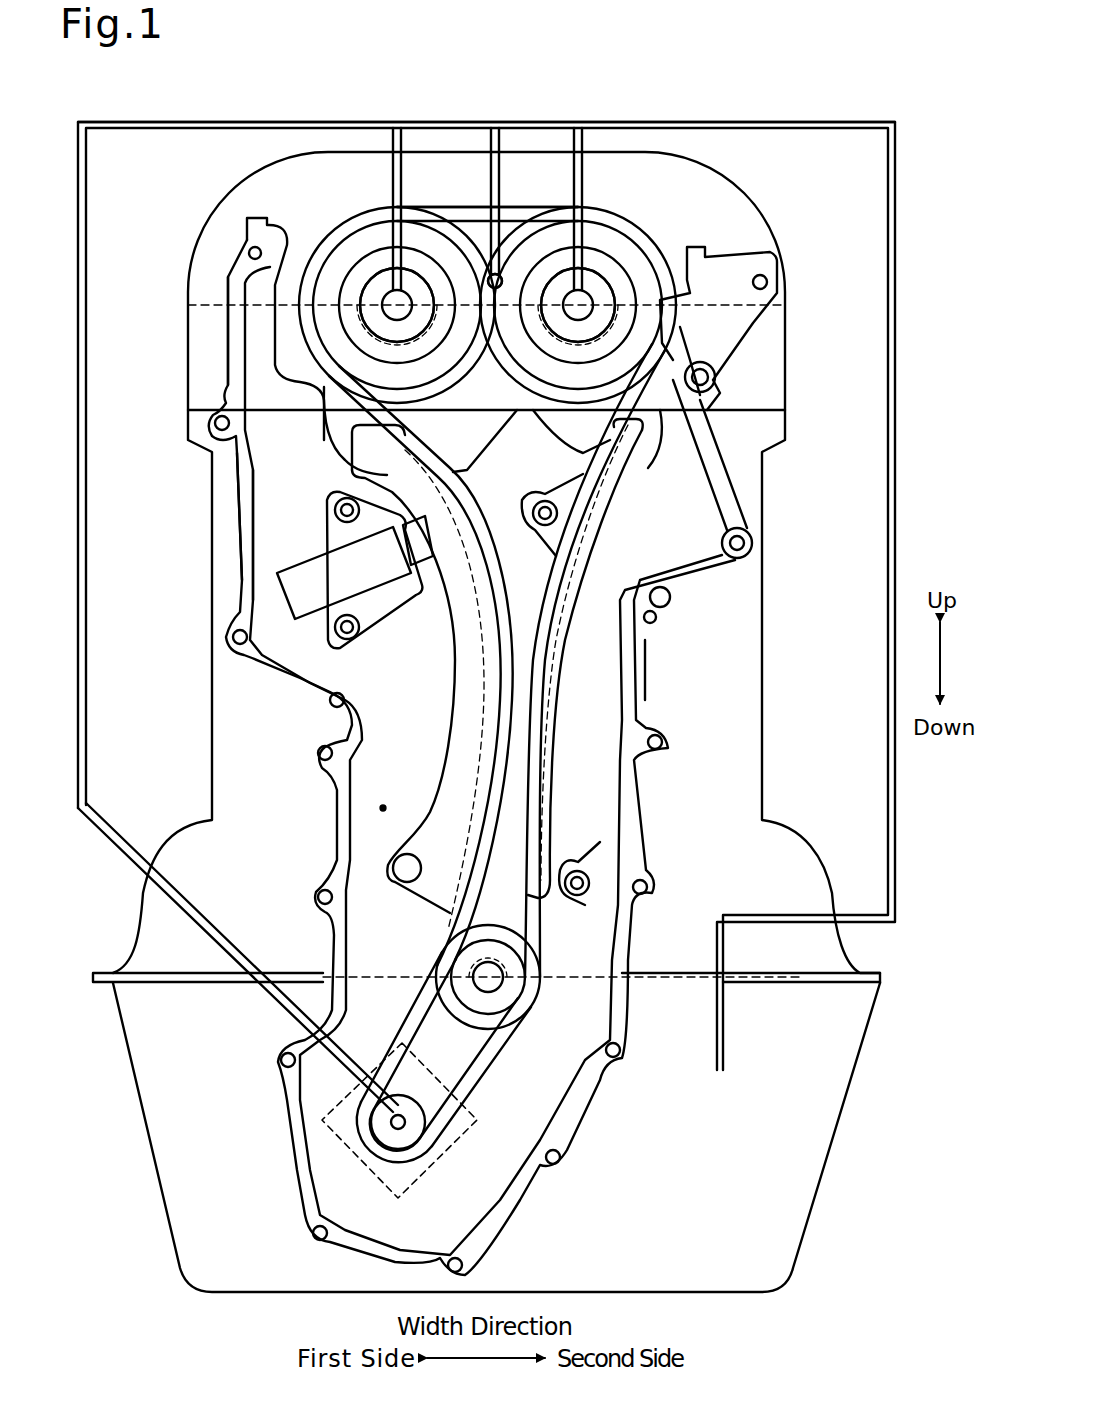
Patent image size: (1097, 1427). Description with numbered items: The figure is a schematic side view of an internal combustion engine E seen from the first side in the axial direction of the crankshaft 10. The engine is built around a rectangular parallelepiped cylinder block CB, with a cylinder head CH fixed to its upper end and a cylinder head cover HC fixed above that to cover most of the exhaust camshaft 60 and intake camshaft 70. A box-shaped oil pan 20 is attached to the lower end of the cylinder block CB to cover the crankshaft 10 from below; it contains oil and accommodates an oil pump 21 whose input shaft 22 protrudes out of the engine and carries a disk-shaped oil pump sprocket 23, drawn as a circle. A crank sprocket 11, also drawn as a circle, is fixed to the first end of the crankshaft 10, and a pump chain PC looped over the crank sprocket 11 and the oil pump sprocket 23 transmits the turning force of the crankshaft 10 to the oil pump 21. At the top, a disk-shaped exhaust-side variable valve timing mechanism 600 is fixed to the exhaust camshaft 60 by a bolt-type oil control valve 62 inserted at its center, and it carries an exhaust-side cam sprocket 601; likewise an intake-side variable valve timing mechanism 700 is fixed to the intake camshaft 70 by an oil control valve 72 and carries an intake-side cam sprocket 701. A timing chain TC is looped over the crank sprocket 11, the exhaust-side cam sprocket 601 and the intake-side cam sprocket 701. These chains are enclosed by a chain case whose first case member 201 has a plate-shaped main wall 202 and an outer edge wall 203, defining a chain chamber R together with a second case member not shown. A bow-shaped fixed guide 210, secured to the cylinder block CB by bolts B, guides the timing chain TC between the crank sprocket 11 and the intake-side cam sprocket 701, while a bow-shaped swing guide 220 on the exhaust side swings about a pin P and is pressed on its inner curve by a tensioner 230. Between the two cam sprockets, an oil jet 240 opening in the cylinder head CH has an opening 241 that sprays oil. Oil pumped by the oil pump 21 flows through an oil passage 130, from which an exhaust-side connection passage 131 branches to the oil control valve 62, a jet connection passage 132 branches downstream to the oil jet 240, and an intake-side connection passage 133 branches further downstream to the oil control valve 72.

The internal combustion engine E is at (797, 106).
The cylinder head cover HC is at (742, 212).
The cylinder head CH is at (775, 352).
The cylinder block CB is at (750, 603).
The oil passage 130 is at (88, 707).
The exhaust-side connection passage 131 is at (390, 168).
The jet connection passage 132 is at (488, 168).
The intake-side connection passage 133 is at (583, 170).
The opening 241 is at (498, 275).
The oil jet 240 is at (495, 281).
The exhaust camshaft 60 is at (382, 290).
The oil control valve 62 is at (380, 267).
The exhaust-side variable valve timing mechanism 600 is at (337, 290).
The exhaust-side cam sprocket 601 is at (323, 323).
The intake camshaft 70 is at (597, 262).
The oil control valve 72 is at (593, 292).
The intake-side variable valve timing mechanism 700 is at (660, 277).
The intake-side cam sprocket 701 is at (653, 323).
The timing chain TC is at (530, 933).
The swing guide 220 is at (455, 745).
The fixed guide 210 is at (597, 515).
The tensioner 230 is at (305, 583).
The bolts B is at (543, 500).
The pin P is at (405, 872).
The chain chamber R is at (383, 808).
The first case member 201 is at (265, 672).
The main wall 202 is at (268, 470).
The outer edge wall 203 is at (243, 510).
The crankshaft 10 is at (493, 977).
The crank sprocket 11 is at (490, 1003).
The pump chain PC is at (490, 1073).
The oil pan 20 is at (818, 1112).
The oil pump 21 is at (378, 1180).
The input shaft 22 is at (403, 1127).
The oil pump sprocket 23 is at (400, 1130).